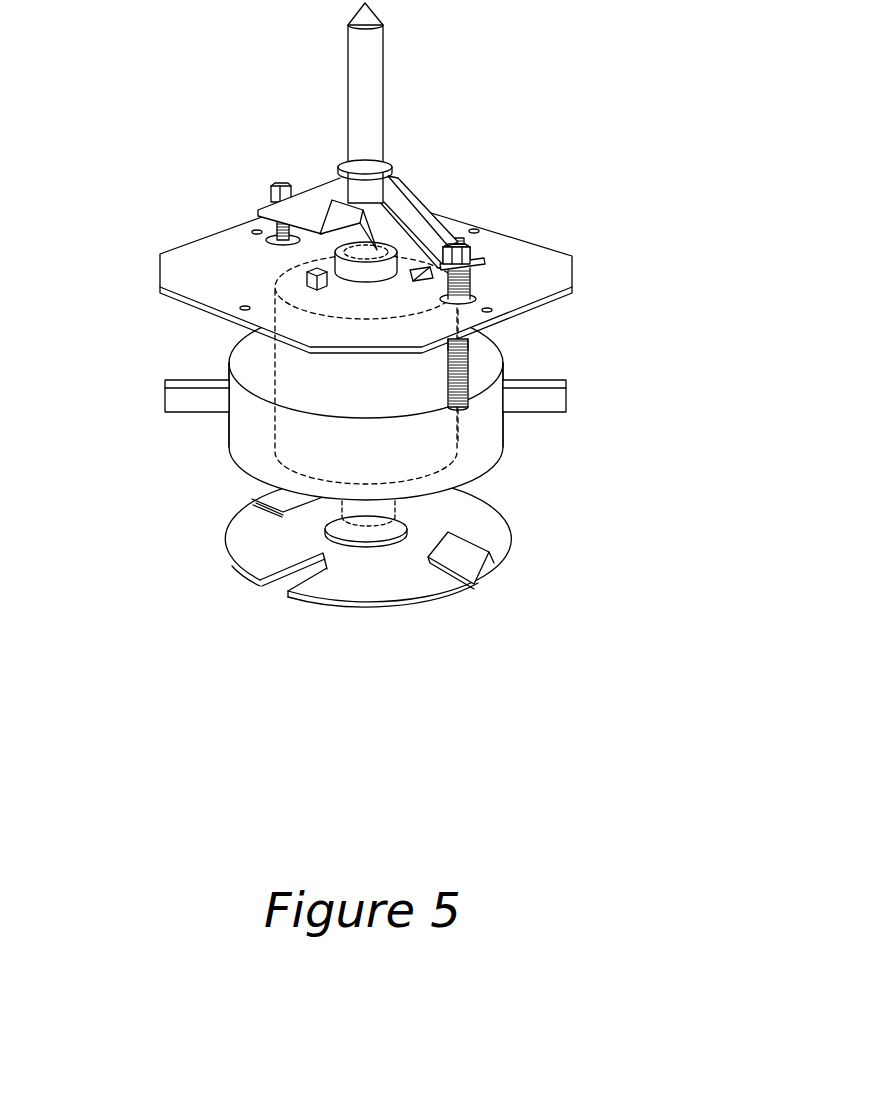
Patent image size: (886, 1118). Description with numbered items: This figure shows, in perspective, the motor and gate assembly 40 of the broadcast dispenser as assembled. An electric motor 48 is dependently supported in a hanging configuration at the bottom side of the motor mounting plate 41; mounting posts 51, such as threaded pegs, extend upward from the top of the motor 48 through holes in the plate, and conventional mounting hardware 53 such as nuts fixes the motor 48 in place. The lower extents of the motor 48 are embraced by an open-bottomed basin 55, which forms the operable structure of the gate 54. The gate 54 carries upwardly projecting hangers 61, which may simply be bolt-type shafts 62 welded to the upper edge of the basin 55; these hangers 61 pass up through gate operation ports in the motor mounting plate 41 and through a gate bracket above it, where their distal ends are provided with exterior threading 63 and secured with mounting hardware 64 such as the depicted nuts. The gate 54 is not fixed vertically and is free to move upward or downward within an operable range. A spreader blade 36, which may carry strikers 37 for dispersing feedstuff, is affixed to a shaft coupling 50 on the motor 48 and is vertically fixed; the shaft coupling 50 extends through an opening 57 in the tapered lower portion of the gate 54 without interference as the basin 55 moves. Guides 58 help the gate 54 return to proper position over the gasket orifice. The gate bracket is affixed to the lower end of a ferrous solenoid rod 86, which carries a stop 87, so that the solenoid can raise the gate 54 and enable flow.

The spreader blade 36 is at (509, 593).
The striker 37 is at (450, 553).
The motor and gate assembly 40 is at (537, 114).
The motor mounting plate 41 is at (553, 268).
The electric motor 48 is at (307, 373).
The shaft coupling 50 is at (370, 533).
The mounting post 51 is at (305, 284).
The mounting hardware 53 is at (295, 268).
The gate 54 is at (485, 447).
The open-bottomed basin 55 is at (240, 447).
The opening 57 is at (313, 515).
The guide 58 is at (553, 398).
The hanger 61 is at (447, 387).
The shaft 62 is at (466, 366).
The exterior threading 63 is at (466, 243).
The mounting hardware 64 is at (270, 200).
The solenoid rod 86 is at (360, 54).
The stop 87 is at (390, 165).